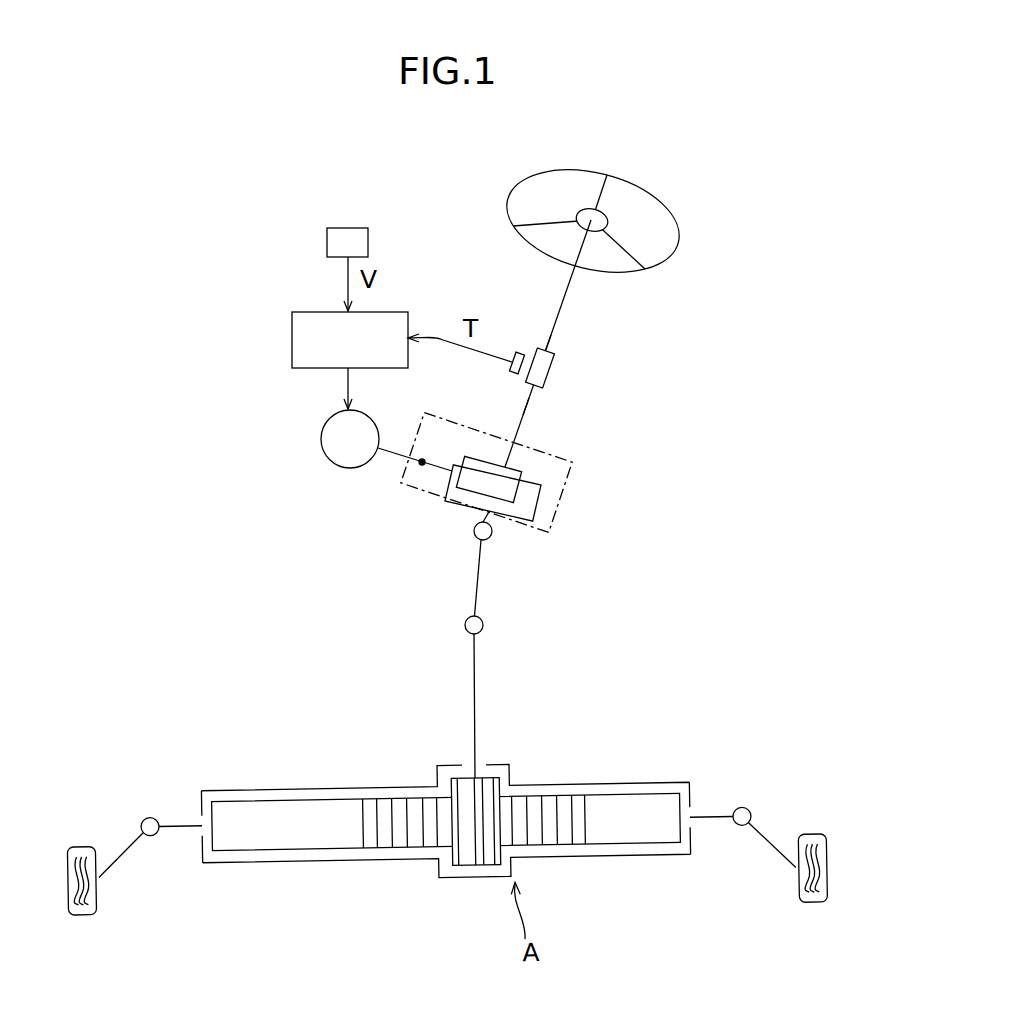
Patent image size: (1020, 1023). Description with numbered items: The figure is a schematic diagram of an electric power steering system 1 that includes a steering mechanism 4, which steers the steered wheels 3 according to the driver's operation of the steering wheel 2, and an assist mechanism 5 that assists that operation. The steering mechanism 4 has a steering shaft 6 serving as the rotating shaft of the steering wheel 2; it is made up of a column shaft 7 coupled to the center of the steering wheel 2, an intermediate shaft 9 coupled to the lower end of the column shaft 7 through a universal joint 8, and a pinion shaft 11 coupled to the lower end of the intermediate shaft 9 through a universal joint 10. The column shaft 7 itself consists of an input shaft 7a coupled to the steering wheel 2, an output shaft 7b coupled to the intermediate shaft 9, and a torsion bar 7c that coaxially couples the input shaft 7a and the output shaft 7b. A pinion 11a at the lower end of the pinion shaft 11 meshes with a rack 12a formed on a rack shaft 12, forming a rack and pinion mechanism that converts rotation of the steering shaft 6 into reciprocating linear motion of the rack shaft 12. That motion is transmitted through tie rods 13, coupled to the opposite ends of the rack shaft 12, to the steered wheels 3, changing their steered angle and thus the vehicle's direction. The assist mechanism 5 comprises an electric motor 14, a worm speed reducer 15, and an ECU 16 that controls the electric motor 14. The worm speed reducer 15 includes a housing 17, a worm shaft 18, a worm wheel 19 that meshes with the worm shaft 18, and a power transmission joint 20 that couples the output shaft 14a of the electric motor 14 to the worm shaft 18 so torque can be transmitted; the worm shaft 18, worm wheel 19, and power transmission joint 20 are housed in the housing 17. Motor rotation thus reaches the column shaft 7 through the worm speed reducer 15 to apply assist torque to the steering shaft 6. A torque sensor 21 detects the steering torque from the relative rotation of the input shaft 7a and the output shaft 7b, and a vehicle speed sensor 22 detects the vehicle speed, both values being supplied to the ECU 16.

The electric power steering system 1 is at (697, 168).
The steering wheel 2 is at (556, 170).
The steered wheels 3 is at (83, 908).
The steering mechanism 4 is at (688, 222).
The assist mechanism 5 is at (311, 418).
The steering shaft 6 is at (570, 291).
The column shaft 7 is at (592, 387).
The input shaft 7a is at (551, 335).
The output shaft 7b is at (570, 419).
The torsion bar 7c is at (549, 372).
The universal joint 8 is at (492, 535).
The intermediate shaft 9 is at (479, 578).
The universal joint 10 is at (483, 627).
The pinion shaft 11 is at (478, 720).
The pinion 11a is at (477, 865).
The rack shaft 12 is at (446, 843).
The rack 12a is at (417, 846).
The tie rods 13 is at (123, 857).
The electric motor 14 is at (345, 468).
The output shaft 14a is at (392, 452).
The worm speed reducer 15 is at (560, 528).
The electronic control unit (ECU) 16 is at (292, 338).
The housing 17 is at (563, 456).
The worm shaft 18 is at (523, 474).
The worm wheel 19 is at (535, 502).
The power transmission joint 20 is at (435, 467).
The torque sensor 21 is at (516, 353).
The vehicle speed sensor 22 is at (327, 240).